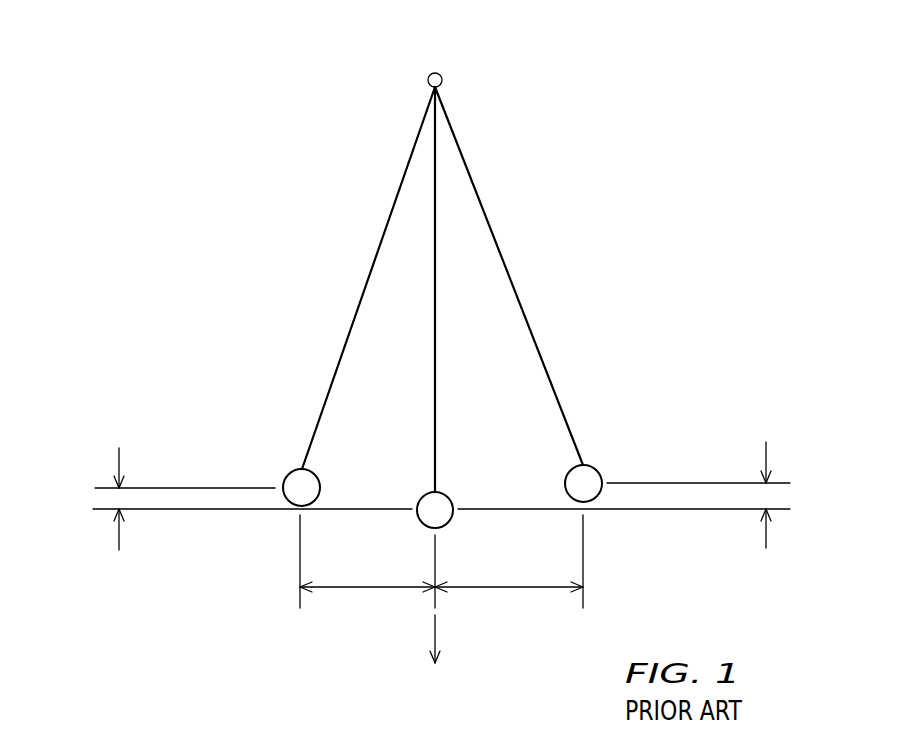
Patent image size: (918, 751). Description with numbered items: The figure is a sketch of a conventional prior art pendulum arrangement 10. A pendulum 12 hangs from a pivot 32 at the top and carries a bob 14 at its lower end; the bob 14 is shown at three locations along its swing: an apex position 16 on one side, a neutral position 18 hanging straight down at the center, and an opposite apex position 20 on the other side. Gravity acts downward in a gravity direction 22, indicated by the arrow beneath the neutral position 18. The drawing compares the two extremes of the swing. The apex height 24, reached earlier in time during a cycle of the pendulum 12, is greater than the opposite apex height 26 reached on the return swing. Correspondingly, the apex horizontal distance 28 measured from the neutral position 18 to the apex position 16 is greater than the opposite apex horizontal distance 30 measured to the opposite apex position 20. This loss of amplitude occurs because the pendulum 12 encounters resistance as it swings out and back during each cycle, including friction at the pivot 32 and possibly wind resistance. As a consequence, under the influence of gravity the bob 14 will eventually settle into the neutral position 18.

The conventional arrangement 10 is at (458, 290).
The pendulum 12 is at (529, 325).
The bob 14 is at (627, 467).
The apex position 16 is at (592, 466).
The neutral position 18 is at (421, 497).
The opposite apex position 20 is at (291, 470).
The gravity direction 22 is at (437, 637).
The apex height 24 is at (767, 455).
The opposite apex height 26 is at (119, 457).
The apex horizontal distance 28 is at (532, 585).
The opposite apex horizontal distance 30 is at (388, 585).
The pivot 32 is at (441, 75).